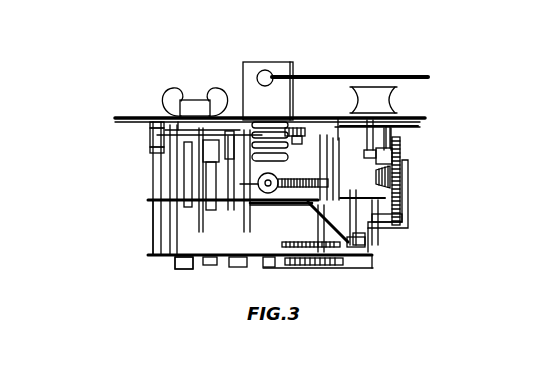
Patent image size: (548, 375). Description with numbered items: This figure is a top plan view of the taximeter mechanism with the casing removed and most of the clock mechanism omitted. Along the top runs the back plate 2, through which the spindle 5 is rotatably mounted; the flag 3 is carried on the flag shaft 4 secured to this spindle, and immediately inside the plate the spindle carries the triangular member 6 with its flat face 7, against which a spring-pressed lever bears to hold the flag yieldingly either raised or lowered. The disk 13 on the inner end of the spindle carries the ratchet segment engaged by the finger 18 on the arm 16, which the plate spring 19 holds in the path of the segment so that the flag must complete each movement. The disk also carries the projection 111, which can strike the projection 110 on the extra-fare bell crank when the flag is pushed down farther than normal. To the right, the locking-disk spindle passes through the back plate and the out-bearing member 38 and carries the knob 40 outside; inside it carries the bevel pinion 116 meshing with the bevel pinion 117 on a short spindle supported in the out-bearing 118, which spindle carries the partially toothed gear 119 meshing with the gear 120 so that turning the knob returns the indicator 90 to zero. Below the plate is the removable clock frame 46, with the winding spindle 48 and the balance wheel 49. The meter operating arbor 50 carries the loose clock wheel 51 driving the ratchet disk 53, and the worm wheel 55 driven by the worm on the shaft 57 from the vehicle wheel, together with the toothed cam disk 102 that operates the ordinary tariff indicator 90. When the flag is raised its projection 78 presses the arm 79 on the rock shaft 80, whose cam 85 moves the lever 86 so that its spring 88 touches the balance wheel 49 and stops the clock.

The back plate 2 is at (120, 116).
The flag 3 is at (405, 75).
The flag shaft 4 is at (242, 76).
The spindle 5 is at (279, 62).
The triangular member 6 is at (289, 129).
The flat face 7 is at (505, 2).
The disk 13 is at (232, 122).
The arm 16 is at (338, 118).
The finger 18 is at (307, 133).
The plate spring 19 is at (400, 151).
The out-bearing member 38 is at (400, 133).
The knob 40 is at (373, 100).
The clock frame 46 is at (154, 257).
The winding spindle 48 is at (195, 106).
The balance wheel 49 is at (385, 242).
The meter operating arbor 50 is at (317, 233).
The wheel 51 is at (350, 254).
The ratchet disk 53 is at (308, 250).
The worm wheel 55 is at (303, 171).
The shaft 57 is at (258, 178).
The projection 78 is at (217, 150).
The arm 79 is at (162, 153).
The rock shaft 80 is at (240, 184).
The cam 85 is at (200, 214).
The lever 86 is at (152, 207).
The spring 88 is at (383, 250).
The indicator 90 is at (230, 267).
The toothed cam disk 102 is at (362, 262).
The projection 110 is at (392, 128).
The projection 111 is at (178, 126).
The bevel pinion 116 is at (404, 168).
The bevel pinion 117 is at (404, 178).
The out-bearing 118 is at (408, 202).
The gear 119 is at (430, 135).
The gear 120 is at (405, 226).